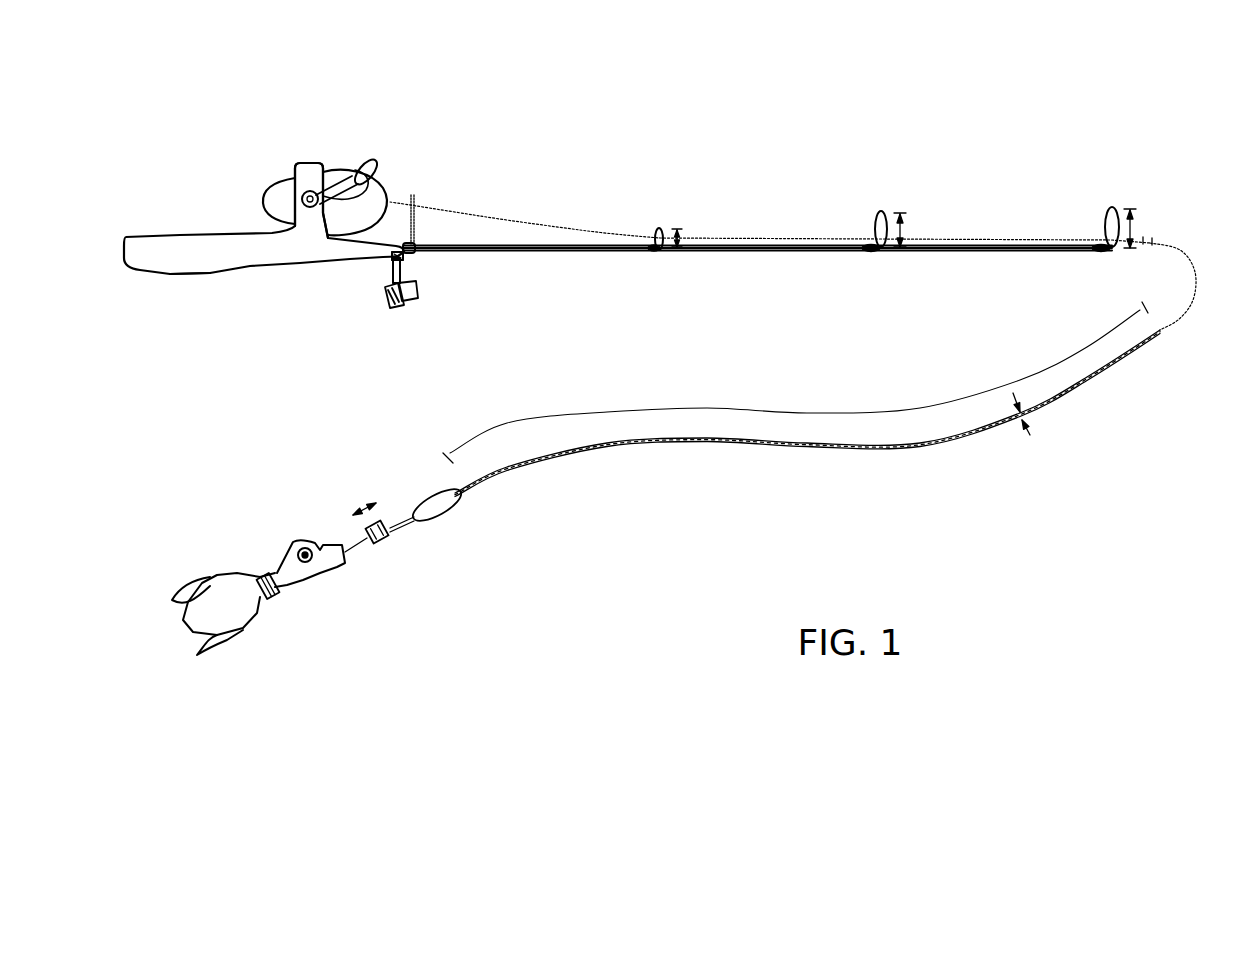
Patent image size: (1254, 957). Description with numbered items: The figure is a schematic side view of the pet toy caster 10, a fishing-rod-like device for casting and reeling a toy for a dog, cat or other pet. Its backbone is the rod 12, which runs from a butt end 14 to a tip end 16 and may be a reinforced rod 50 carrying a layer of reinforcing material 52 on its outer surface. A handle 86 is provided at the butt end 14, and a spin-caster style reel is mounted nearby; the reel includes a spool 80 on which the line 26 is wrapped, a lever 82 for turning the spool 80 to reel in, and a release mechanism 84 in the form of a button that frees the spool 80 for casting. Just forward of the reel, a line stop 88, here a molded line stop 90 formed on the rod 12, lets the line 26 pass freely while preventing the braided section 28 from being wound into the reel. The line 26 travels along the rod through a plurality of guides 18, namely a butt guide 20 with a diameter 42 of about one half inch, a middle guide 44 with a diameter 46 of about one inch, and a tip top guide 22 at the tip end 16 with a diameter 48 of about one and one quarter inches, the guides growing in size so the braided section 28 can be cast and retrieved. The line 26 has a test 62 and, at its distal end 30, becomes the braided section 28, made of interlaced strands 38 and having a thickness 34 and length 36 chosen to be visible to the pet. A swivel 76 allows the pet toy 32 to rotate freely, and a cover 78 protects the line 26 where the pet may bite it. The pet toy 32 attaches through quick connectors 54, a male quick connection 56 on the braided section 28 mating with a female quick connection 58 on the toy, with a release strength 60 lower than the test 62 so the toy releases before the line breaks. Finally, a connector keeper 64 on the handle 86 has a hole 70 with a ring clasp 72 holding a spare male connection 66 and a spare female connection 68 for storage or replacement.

The pet toy caster 10 is at (744, 102).
The rod 12 is at (545, 252).
The butt end 14 is at (143, 281).
The tip end 16 is at (1194, 206).
The plurality of guides 18 is at (1010, 138).
The butt guide 20 is at (656, 228).
The tip top guide 22 is at (1109, 210).
The line 26 is at (1183, 310).
The braided section 28 is at (256, 150).
The distal end 30 is at (350, 602).
The pet toy 32 is at (232, 608).
The thickness 34 is at (1030, 436).
The length 36 is at (797, 410).
The strands 38 is at (792, 461).
The diameter 42 is at (681, 231).
The middle guide 44 is at (877, 214).
The diameter 46 is at (904, 232).
The diameter 48 is at (1134, 232).
The reinforced rod 50 is at (612, 254).
The reinforcing material 52 is at (775, 252).
The quick connectors 54 is at (350, 492).
The male quick connection 56 is at (393, 541).
The female quick connection 58 is at (374, 546).
The release strength 60 is at (363, 505).
The test 62 is at (500, 214).
The connector keeper 64 is at (335, 302).
The spare male connection 66 is at (422, 295).
The spare female connection 68 is at (400, 308).
The hole 70 is at (388, 258).
The ring clasp 72 is at (392, 286).
The swivel 76 is at (466, 521).
The cover 78 is at (386, 481).
The spool 80 is at (323, 136).
The lever 82 is at (375, 165).
The release mechanism 84 is at (262, 200).
The handle 86 is at (225, 258).
The line stop 88 is at (414, 195).
The molded line stop 90 is at (416, 256).